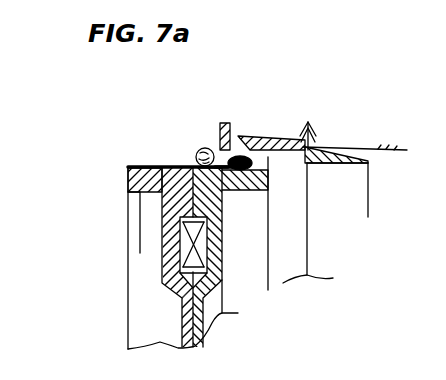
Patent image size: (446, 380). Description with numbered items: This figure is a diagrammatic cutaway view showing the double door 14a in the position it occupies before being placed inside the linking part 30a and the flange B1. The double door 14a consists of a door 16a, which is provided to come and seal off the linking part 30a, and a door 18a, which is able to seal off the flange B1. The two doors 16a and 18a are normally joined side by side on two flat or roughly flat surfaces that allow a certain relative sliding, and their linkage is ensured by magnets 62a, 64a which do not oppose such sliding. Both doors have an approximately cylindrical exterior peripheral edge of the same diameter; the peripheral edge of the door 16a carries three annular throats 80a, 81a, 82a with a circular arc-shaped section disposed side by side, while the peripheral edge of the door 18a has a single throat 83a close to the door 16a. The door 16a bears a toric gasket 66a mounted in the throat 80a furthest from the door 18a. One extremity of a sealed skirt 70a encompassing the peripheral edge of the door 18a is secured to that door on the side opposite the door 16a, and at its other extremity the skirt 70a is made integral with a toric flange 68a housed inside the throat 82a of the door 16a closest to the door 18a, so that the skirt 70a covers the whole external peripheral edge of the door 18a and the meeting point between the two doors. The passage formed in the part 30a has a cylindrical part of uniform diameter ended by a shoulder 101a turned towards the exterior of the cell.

The double door 14a is at (118, 286).
The door 16a is at (228, 300).
The door 18a is at (157, 222).
The linking part 30a is at (372, 143).
The magnet 62a is at (218, 256).
The magnet 64a is at (173, 255).
The toric gasket 66a is at (268, 182).
The toric flange 68a is at (197, 150).
The sealed skirt 70a is at (118, 171).
The annular throat 80a is at (258, 160).
The annular throat 81a is at (238, 135).
The annular throat 82a is at (208, 143).
The throat 83a is at (163, 167).
The shoulder 101a is at (362, 150).
The flange B1 is at (318, 144).